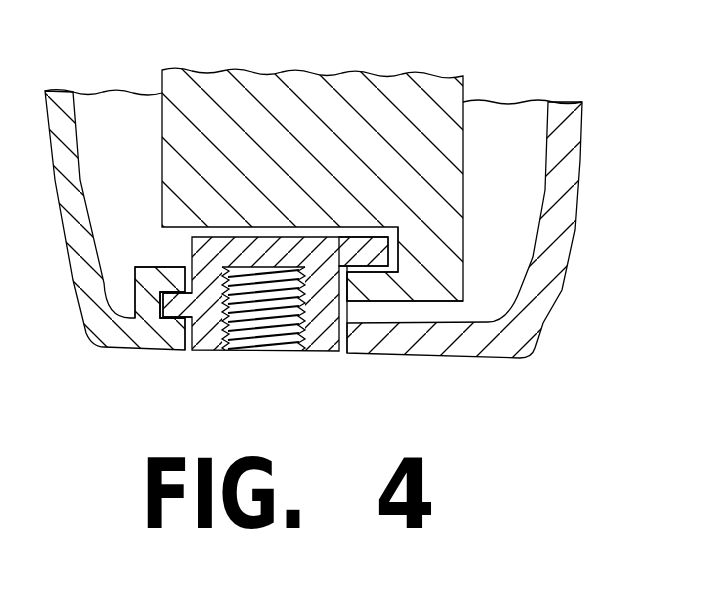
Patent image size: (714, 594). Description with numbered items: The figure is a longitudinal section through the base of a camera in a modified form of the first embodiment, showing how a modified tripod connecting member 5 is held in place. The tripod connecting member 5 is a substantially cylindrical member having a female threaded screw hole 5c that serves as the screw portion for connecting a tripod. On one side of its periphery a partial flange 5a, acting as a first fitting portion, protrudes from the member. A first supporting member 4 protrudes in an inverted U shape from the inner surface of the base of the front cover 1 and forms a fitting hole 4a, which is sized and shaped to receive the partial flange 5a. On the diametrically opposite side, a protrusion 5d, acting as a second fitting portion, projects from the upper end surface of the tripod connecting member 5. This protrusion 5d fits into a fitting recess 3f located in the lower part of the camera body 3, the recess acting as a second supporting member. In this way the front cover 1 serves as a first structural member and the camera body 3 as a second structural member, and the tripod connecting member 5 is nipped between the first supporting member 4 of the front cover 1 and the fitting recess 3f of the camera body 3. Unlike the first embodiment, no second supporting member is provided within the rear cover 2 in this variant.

The front cover 1 is at (82, 258).
The rear cover 2 is at (558, 262).
The camera body 3 is at (297, 93).
The fitting recess 3f is at (402, 258).
The first supporting member 4 is at (150, 282).
The fitting hole 4a is at (158, 300).
The tripod connecting member 5 is at (327, 333).
The partial flange 5a is at (178, 307).
The female threaded screw hole 5c is at (265, 315).
The protrusion 5d is at (366, 250).